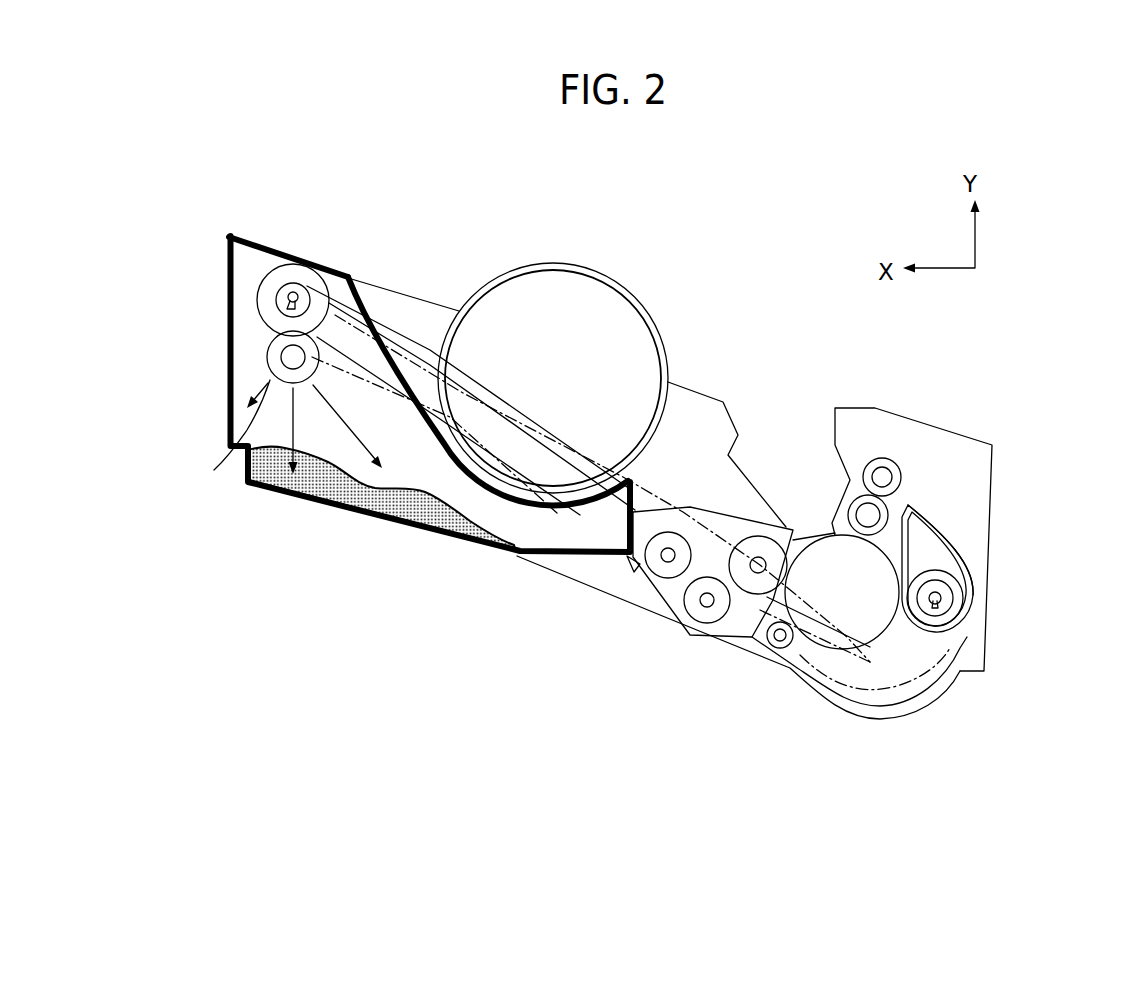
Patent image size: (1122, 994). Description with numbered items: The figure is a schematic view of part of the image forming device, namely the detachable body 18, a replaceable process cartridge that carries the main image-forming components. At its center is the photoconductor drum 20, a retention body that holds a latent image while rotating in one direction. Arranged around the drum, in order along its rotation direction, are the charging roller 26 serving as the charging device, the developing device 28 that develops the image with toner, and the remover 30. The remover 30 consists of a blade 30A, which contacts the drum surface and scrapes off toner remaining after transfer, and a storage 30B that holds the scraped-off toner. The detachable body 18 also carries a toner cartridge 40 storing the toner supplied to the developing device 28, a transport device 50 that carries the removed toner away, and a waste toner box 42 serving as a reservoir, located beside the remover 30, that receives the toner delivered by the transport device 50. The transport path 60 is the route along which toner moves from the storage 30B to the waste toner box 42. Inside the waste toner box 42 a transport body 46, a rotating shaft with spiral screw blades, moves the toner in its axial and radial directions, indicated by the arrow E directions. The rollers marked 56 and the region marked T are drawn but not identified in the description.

The detachable body 18 is at (945, 417).
The photoconductor drum 20 is at (883, 633).
The charging roller 26 is at (847, 505).
The developing device 28 is at (741, 502).
The remover 30 is at (948, 517).
The blade 30A is at (962, 548).
The storage 30B is at (978, 578).
The toner cartridge 40 is at (600, 273).
The waste toner box 42 is at (216, 429).
The transport body 46 is at (267, 354).
The transport device 50 is at (884, 730).
The rollers 56 is at (292, 294).
The transport path 60 is at (632, 565).
The arrow E directions E is at (350, 428).
The toner T is at (362, 503).